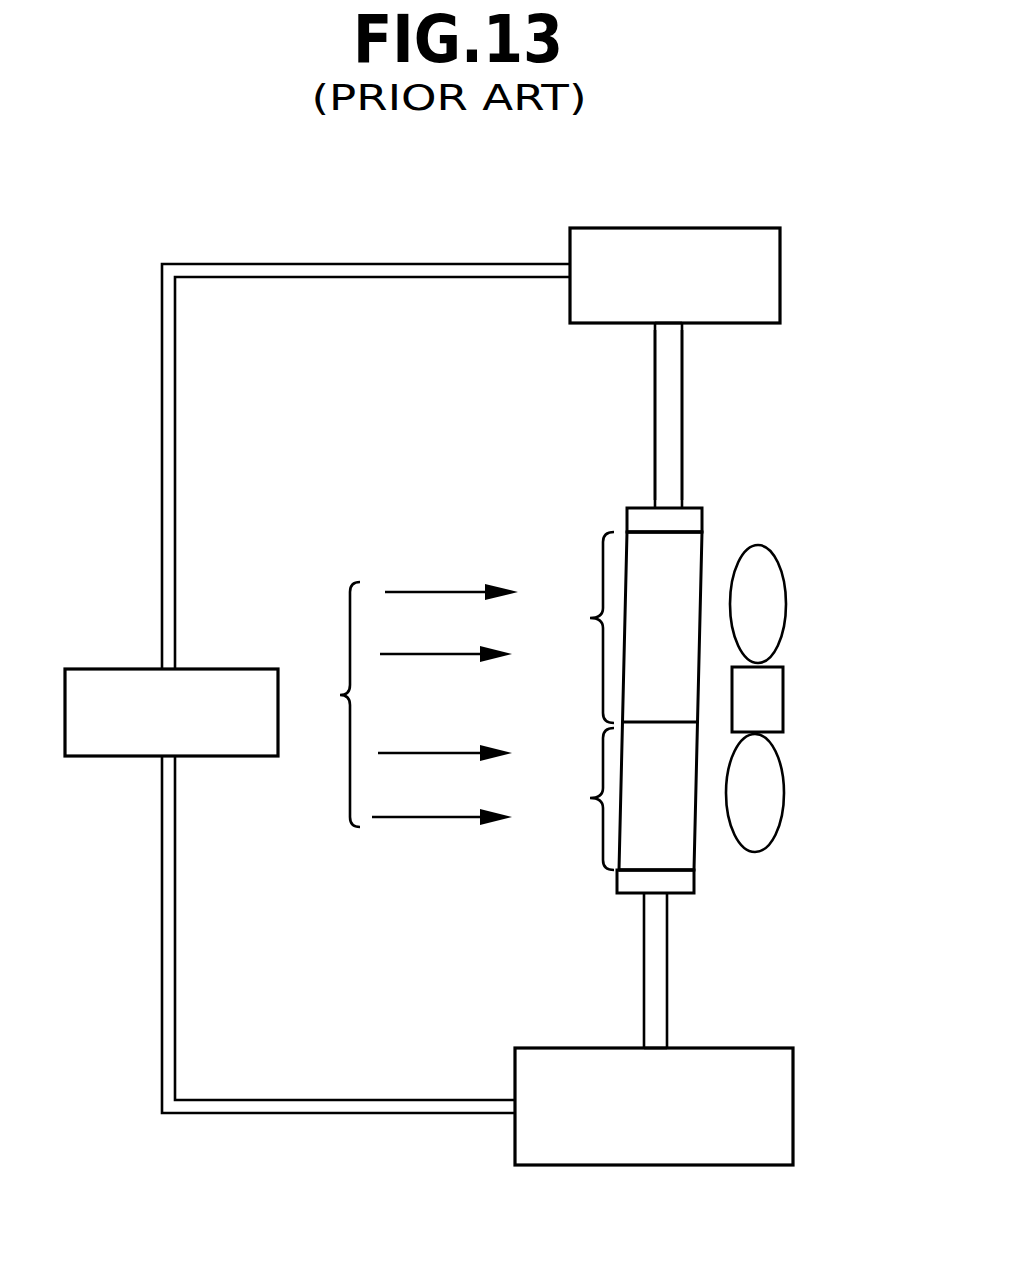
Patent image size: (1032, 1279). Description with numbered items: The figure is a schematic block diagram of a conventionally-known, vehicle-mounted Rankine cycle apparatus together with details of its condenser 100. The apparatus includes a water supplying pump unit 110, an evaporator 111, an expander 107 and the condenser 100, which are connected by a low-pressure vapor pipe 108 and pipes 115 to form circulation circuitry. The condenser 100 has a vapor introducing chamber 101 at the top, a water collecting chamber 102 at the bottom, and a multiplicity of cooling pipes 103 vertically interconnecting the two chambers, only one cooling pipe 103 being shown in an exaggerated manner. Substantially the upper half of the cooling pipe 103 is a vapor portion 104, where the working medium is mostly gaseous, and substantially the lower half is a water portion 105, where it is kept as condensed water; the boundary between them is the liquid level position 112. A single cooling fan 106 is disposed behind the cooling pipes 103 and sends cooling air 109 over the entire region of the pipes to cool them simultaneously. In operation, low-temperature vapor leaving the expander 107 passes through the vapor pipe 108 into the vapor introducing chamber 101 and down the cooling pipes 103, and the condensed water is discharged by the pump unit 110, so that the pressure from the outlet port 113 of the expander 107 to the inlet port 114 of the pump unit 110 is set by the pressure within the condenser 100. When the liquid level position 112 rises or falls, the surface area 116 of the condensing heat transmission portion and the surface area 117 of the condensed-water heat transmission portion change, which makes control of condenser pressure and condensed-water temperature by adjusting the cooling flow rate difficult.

The condenser 100 is at (780, 488).
The vapor introducing chamber 101 is at (688, 512).
The water collecting chamber 102 is at (613, 886).
The cooling pipes 103 is at (712, 852).
The vapor portion 104 is at (687, 550).
The water portion 105 is at (684, 857).
The cooling fan 106 is at (767, 803).
The expander 107 is at (782, 277).
The low-pressure vapor pipe 108 is at (682, 392).
The cooling air 109 is at (340, 695).
The water supplying pump unit 110 is at (793, 1100).
The evaporator 111 is at (97, 669).
The liquid level position 112 is at (652, 720).
The outlet port 113 is at (657, 327).
The inlet port 114 is at (663, 1046).
The pipes 115 is at (268, 263).
The surface area of condensing heat transmission portion 116 is at (590, 618).
The surface area of condensed water heat transmission portion 117 is at (590, 798).